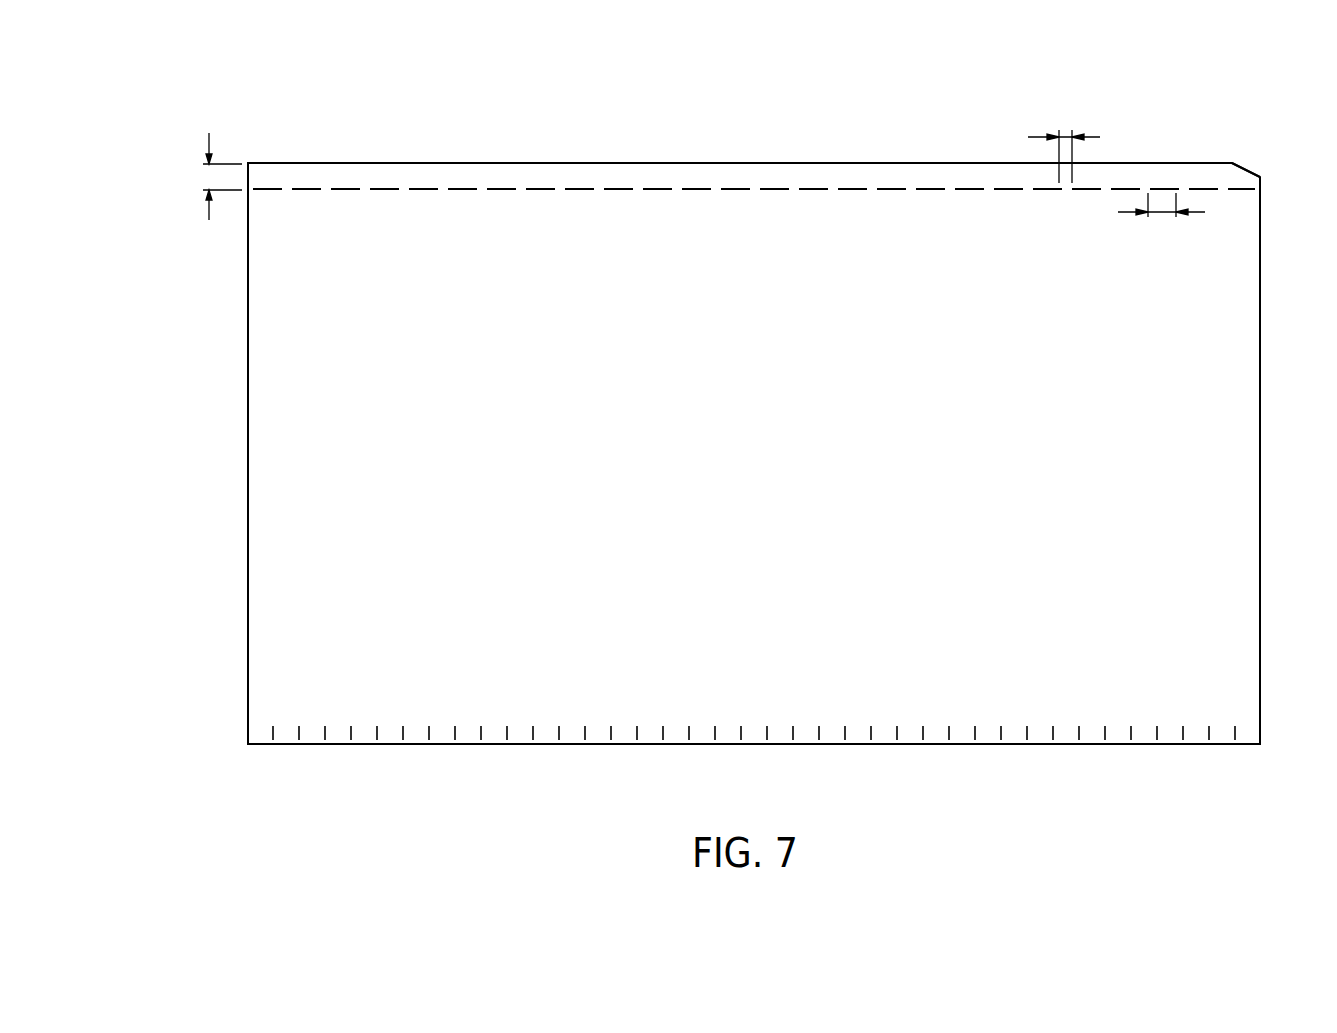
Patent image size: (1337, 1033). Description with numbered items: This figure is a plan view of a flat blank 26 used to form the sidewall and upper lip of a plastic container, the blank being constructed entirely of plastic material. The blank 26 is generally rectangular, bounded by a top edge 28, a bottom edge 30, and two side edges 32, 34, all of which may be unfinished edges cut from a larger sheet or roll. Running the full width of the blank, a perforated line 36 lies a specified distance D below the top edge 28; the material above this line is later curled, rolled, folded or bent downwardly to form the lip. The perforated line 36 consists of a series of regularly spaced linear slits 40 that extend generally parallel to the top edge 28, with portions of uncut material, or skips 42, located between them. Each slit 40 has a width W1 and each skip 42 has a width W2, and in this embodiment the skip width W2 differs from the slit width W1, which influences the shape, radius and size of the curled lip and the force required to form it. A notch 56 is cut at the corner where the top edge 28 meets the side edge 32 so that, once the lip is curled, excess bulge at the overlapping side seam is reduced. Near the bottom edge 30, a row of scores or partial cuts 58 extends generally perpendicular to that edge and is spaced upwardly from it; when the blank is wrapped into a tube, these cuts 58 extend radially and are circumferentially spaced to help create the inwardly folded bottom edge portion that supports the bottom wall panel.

The blank 26 is at (262, 135).
The top edge 28 is at (793, 163).
The bottom edge 30 is at (928, 745).
The side edge 32 is at (1261, 458).
The side edge 34 is at (248, 460).
The perforated line 36 is at (797, 198).
The slits 40 is at (928, 191).
The skips 42 is at (910, 188).
The notch 56 is at (1250, 167).
The partial cuts 58 is at (975, 733).
The distance D is at (222, 176).
The width of slit W1 is at (1162, 218).
The width of skip W2 is at (1067, 132).